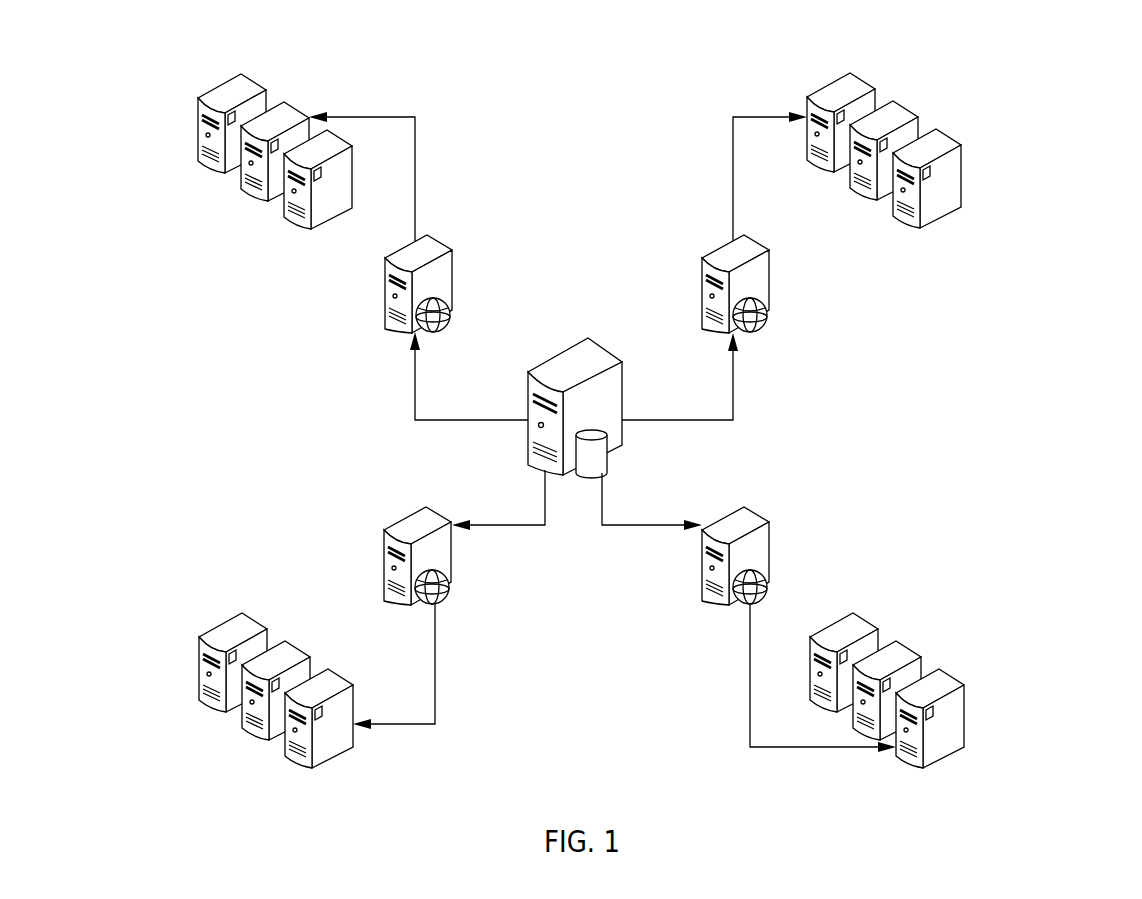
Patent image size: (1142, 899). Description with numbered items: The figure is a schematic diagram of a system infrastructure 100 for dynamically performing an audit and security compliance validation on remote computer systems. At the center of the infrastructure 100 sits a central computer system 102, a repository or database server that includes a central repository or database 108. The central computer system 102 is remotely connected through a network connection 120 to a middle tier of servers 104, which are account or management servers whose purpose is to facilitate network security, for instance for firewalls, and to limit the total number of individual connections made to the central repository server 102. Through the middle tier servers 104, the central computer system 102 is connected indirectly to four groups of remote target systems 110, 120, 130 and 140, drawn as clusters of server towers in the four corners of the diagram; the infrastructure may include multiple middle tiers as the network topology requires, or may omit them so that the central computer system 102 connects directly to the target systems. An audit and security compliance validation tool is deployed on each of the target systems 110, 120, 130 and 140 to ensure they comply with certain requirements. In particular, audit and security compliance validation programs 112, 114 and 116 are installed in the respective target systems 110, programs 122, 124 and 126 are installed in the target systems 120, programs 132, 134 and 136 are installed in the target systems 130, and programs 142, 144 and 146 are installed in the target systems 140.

The system infrastructure 100 is at (1025, 83).
The central computer system 102 is at (580, 340).
The middle tier servers 104 is at (702, 287).
The central repository or database 108 is at (597, 462).
The target systems 110 is at (217, 299).
The audit and security compliance validation program 112 is at (252, 88).
The audit and security compliance validation program 114 is at (290, 128).
The audit and security compliance validation program 116 is at (325, 168).
The network connection 120 is at (415, 397).
The audit and security compliance validation program 122 is at (861, 87).
The audit and security compliance validation program 124 is at (899, 127).
The audit and security compliance validation program 126 is at (934, 167).
The target systems 130 is at (219, 824).
The audit and security compliance validation program 132 is at (253, 627).
The audit and security compliance validation program 134 is at (291, 667).
The audit and security compliance validation program 136 is at (326, 707).
The target systems 140 is at (896, 826).
The audit and security compliance validation program 142 is at (864, 627).
The audit and security compliance validation program 144 is at (902, 667).
The audit and security compliance validation program 146 is at (937, 707).